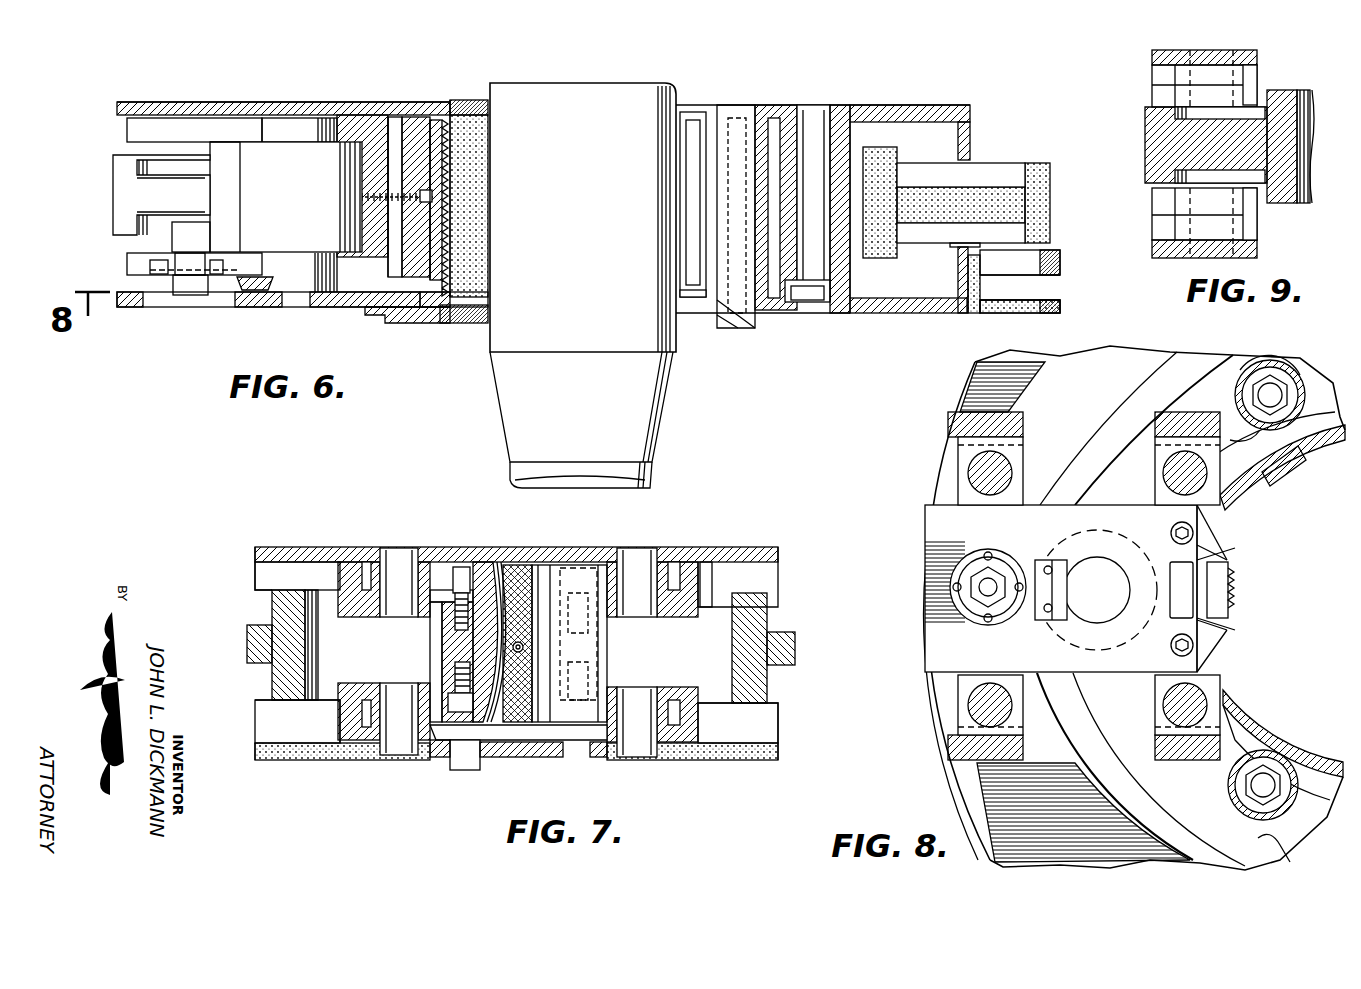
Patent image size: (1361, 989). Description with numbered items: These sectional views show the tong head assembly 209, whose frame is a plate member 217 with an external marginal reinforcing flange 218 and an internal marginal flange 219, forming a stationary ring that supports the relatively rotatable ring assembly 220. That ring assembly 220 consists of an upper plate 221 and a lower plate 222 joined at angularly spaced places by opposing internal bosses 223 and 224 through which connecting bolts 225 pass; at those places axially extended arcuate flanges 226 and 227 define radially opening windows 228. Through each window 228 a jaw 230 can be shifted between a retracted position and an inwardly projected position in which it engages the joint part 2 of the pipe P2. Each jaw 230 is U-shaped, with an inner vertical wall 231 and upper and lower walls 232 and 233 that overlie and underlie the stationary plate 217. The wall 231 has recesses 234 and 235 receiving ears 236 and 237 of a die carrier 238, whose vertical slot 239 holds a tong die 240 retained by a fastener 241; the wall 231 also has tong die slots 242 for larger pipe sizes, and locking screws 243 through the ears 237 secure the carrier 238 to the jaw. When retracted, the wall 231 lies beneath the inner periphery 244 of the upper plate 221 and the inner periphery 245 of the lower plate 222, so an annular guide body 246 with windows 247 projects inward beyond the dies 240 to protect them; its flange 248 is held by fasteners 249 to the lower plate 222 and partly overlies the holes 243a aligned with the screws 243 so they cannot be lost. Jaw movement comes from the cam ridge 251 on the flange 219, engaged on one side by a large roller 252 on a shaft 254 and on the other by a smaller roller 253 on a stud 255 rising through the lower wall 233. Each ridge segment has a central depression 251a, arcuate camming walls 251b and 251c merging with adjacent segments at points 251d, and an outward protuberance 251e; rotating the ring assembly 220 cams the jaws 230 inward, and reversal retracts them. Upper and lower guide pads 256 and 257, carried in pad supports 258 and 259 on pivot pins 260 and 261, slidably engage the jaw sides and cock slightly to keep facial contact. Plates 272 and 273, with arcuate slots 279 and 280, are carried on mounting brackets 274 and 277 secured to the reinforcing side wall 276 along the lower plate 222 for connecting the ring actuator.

In FIG. 6, the joint part 2 is at (578, 85).
In FIG. 6, the pipe P2 is at (520, 470).
In FIG. 6, the tong head assembly 209 is at (203, 101).
In FIG. 6, the plate member 217 is at (150, 200).
In FIG. 9, the plate member 217 is at (1190, 148).
In FIG. 7, the plate member 217 is at (795, 655).
In FIG. 8, the plate member 217 is at (1085, 856).
In FIG. 6, the external marginal reinforcing flange 218 is at (113, 172).
In FIG. 9, the external marginal reinforcing flange 218 is at (1160, 129).
In FIG. 8, the external marginal reinforcing flange 218 is at (985, 795).
In FIG. 6, the internal marginal flange 219 is at (232, 165).
In FIG. 9, the internal marginal flange 219 is at (1280, 108).
In FIG. 7, the internal marginal flange 219 is at (280, 603).
In FIG. 6, the ring assembly 220 is at (430, 101).
In FIG. 6, the upper plate 221 is at (310, 102).
In FIG. 7, the upper plate 221 is at (770, 547).
In FIG. 6, the lower plate 222 is at (238, 308).
In FIG. 7, the lower plate 222 is at (770, 762).
In FIG. 6, the internal boss 223 is at (862, 120).
In FIG. 6, the internal boss 224 is at (842, 312).
In FIG. 8, the internal boss 224 is at (1260, 372).
In FIG. 6, the connecting bolt 225 is at (815, 110).
In FIG. 8, the connecting bolt 225 is at (1275, 392).
In FIG. 6, the arcuate flange 226 is at (773, 120).
In FIG. 6, the arcuate flange 227 is at (770, 302).
In FIG. 8, the arcuate flange 227 is at (1240, 443).
In FIG. 8, the window 228 is at (1230, 545).
In FIG. 6, the jaw 230 is at (138, 102).
In FIG. 7, the jaw 230 is at (544, 565).
In FIG. 8, the jaw 230 is at (930, 625).
In FIG. 6, the inner vertical wall 231 is at (395, 165).
In FIG. 7, the inner vertical wall 231 is at (455, 640).
In FIG. 8, the inner vertical wall 231 is at (1205, 650).
In FIG. 6, the upper wall 232 is at (163, 118).
In FIG. 6, the lower wall 233 is at (140, 266).
In FIG. 7, the recess 234 is at (460, 567).
In FIG. 7, the recess 235 is at (450, 710).
In FIG. 7, the ear 236 is at (484, 562).
In FIG. 7, the ear 237 is at (495, 742).
In FIG. 6, the die carrier 238 is at (690, 160).
In FIG. 7, the die carrier 238 is at (515, 565).
In FIG. 8, the die carrier 238 is at (1240, 630).
In FIG. 6, the slot 239 is at (446, 268).
In FIG. 8, the slot 239 is at (1238, 597).
In FIG. 6, the tong die 240 is at (446, 253).
In FIG. 7, the tong die 240 is at (585, 567).
In FIG. 8, the tong die 240 is at (1230, 585).
In FIG. 6, the fastener 241 is at (432, 196).
In FIG. 7, the fastener 241 is at (524, 647).
In FIG. 6, the tong die slot 242 is at (416, 136).
In FIG. 8, the tong die slot 242 is at (1195, 575).
In FIG. 7, the locking screw 243 is at (468, 770).
In FIG. 8, the locking screw 243 is at (1175, 525).
In FIG. 6, the hole 243a is at (310, 300).
In FIG. 7, the hole 243a is at (440, 757).
In FIG. 6, the inner periphery 244 is at (410, 102).
In FIG. 6, the inner periphery 245 is at (462, 324).
In FIG. 6, the annular body 246 is at (735, 322).
In FIG. 8, the annular body 246 is at (1280, 461).
In FIG. 6, the window 247 is at (466, 112).
In FIG. 8, the window 247 is at (1285, 500).
In FIG. 6, the flange 248 is at (385, 317).
In FIG. 6, the fastener 249 is at (402, 324).
In FIG. 6, the cam ridge 251 is at (232, 238).
In FIG. 9, the cam ridge 251 is at (1285, 195).
In FIG. 7, the cam ridge 251 is at (285, 670).
In FIG. 8, the cam ridge 251 is at (1180, 812).
In FIG. 6, the central depression 251a is at (240, 210).
In FIG. 8, the camming wall 251b is at (1122, 775).
In FIG. 8, the camming wall 251c is at (1175, 375).
In FIG. 6, the merge point 251d is at (868, 258).
In FIG. 8, the merge point 251d is at (1278, 846).
In FIG. 6, the protuberance 251e is at (174, 188).
In FIG. 6, the roller 252 is at (280, 197).
In FIG. 8, the roller 252 is at (1060, 640).
In FIG. 6, the roller 253 is at (172, 237).
In FIG. 6, the shaft 254 is at (276, 118).
In FIG. 8, the shaft 254 is at (1095, 565).
In FIG. 6, the stud 255 is at (180, 296).
In FIG. 8, the stud 255 is at (980, 605).
In FIG. 9, the upper guide pad 256 is at (1257, 70).
In FIG. 7, the upper guide pad 256 is at (708, 562).
In FIG. 9, the lower guide pad 257 is at (1238, 215).
In FIG. 7, the lower guide pad 257 is at (355, 720).
In FIG. 8, the lower guide pad 257 is at (970, 448).
In FIG. 9, the pad support 258 is at (1160, 83).
In FIG. 7, the pad support 258 is at (348, 565).
In FIG. 9, the pad support 259 is at (1162, 232).
In FIG. 7, the pad support 259 is at (345, 718).
In FIG. 8, the pad support 259 is at (1005, 415).
In FIG. 9, the pivot pin 260 is at (1215, 60).
In FIG. 7, the pivot pin 260 is at (398, 560).
In FIG. 9, the pivot pin 261 is at (1185, 250).
In FIG. 7, the pivot pin 261 is at (640, 700).
In FIG. 8, the pivot pin 261 is at (975, 470).
In FIG. 6, the plate 272 is at (1060, 275).
In FIG. 6, the plate 273 is at (1060, 309).
In FIG. 6, the mounting bracket 274 is at (977, 236).
In FIG. 6, the reinforcing side wall 276 is at (960, 285).
In FIG. 6, the mounting bracket 277 is at (975, 314).
In FIG. 6, the arcuate slot 279 is at (1000, 287).
In FIG. 6, the arcuate slot 280 is at (1020, 314).